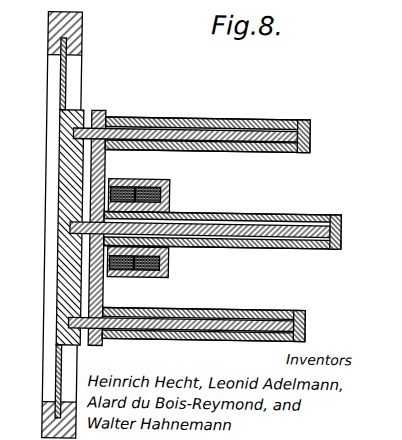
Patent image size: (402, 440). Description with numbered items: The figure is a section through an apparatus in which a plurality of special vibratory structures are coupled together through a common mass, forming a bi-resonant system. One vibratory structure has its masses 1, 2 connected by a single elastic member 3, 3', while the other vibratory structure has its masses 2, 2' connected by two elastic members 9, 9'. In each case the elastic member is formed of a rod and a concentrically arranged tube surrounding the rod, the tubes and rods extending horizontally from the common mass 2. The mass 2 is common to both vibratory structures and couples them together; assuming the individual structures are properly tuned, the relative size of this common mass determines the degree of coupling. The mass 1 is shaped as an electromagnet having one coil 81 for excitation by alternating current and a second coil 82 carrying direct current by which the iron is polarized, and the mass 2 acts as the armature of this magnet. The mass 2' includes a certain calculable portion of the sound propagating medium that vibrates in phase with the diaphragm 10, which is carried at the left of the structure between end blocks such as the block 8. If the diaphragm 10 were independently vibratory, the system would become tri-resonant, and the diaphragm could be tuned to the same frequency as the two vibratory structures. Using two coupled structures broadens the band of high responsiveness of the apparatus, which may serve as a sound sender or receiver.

The end block of supporting channel 8 is at (74, 33).
The diaphragm 10 is at (58, 85).
The mass 2' is at (45, 227).
The common mass 2 is at (110, 218).
The elastic member 9 is at (191, 149).
The elastic member 9' is at (299, 151).
The elastic member 3 is at (205, 242).
The elastic member 3' is at (315, 244).
The mass 1 is at (168, 203).
The coil 81 is at (118, 274).
The coil 82 is at (156, 273).